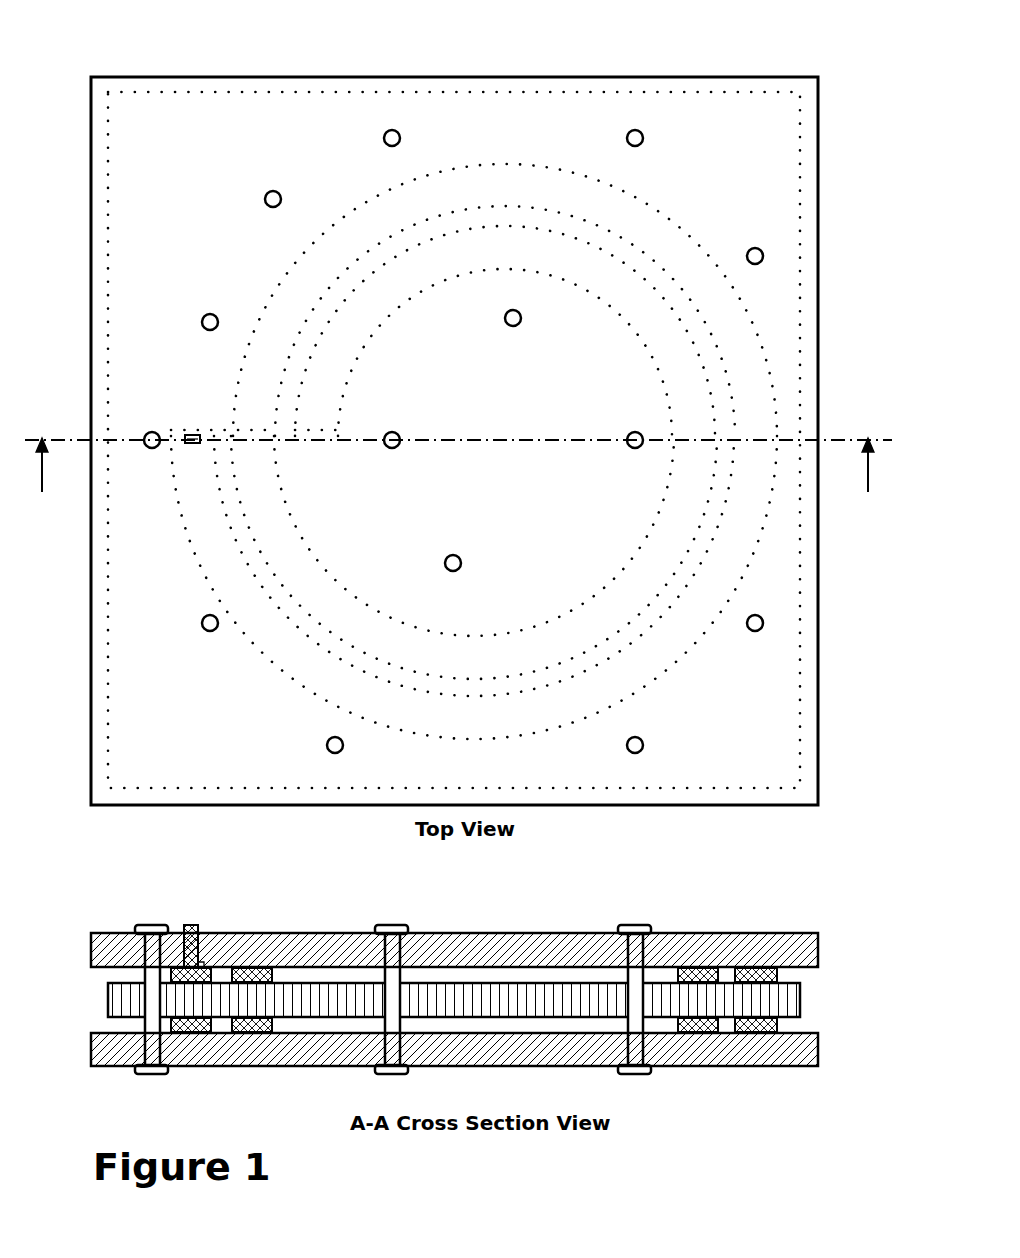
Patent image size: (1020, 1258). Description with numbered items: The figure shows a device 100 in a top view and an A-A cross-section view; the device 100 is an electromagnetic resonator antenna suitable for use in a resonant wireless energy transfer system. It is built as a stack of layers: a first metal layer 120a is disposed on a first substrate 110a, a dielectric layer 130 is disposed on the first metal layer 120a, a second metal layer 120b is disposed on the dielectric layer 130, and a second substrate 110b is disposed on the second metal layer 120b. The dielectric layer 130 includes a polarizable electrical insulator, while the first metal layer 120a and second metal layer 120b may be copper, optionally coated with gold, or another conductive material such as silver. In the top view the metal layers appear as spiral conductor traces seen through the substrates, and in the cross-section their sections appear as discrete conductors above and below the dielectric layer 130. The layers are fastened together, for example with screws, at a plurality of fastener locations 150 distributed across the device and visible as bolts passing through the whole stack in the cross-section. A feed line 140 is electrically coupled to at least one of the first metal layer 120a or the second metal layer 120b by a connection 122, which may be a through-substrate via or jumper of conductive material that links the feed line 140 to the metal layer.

The device 100 is at (828, 62).
The first substrate 110a is at (530, 1066).
The second substrate 110b is at (455, 933).
The first metal layer 120a is at (232, 1033).
The second metal layer 120b is at (255, 967).
The connection 122 is at (200, 967).
The dielectric layer 130 is at (660, 92).
The feed line 140 is at (190, 430).
The fastener locations 150 is at (628, 444).